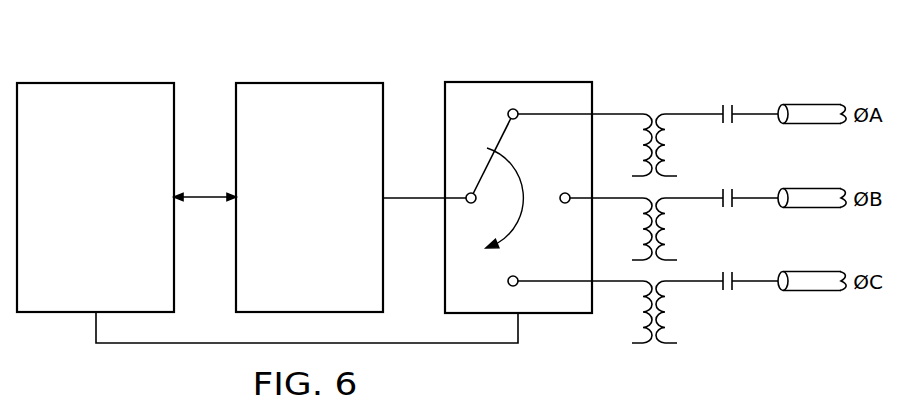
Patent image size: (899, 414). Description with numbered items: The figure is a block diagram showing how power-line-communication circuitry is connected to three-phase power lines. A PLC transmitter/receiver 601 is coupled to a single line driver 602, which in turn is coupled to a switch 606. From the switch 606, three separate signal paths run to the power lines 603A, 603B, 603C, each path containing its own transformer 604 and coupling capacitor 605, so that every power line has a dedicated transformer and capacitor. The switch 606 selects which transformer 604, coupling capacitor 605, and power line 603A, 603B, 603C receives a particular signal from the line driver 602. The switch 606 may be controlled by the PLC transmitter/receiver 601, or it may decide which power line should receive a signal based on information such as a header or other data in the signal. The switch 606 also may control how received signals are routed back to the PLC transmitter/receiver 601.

The PLC transmitter/receiver 601 is at (75, 257).
The line driver 602 is at (329, 230).
The switch 606 is at (531, 76).
The transformer 604 is at (658, 106).
The coupling capacitor 605 is at (726, 103).
The power line 603A is at (812, 103).
The power line 603B is at (812, 186).
The power line 603C is at (812, 292).